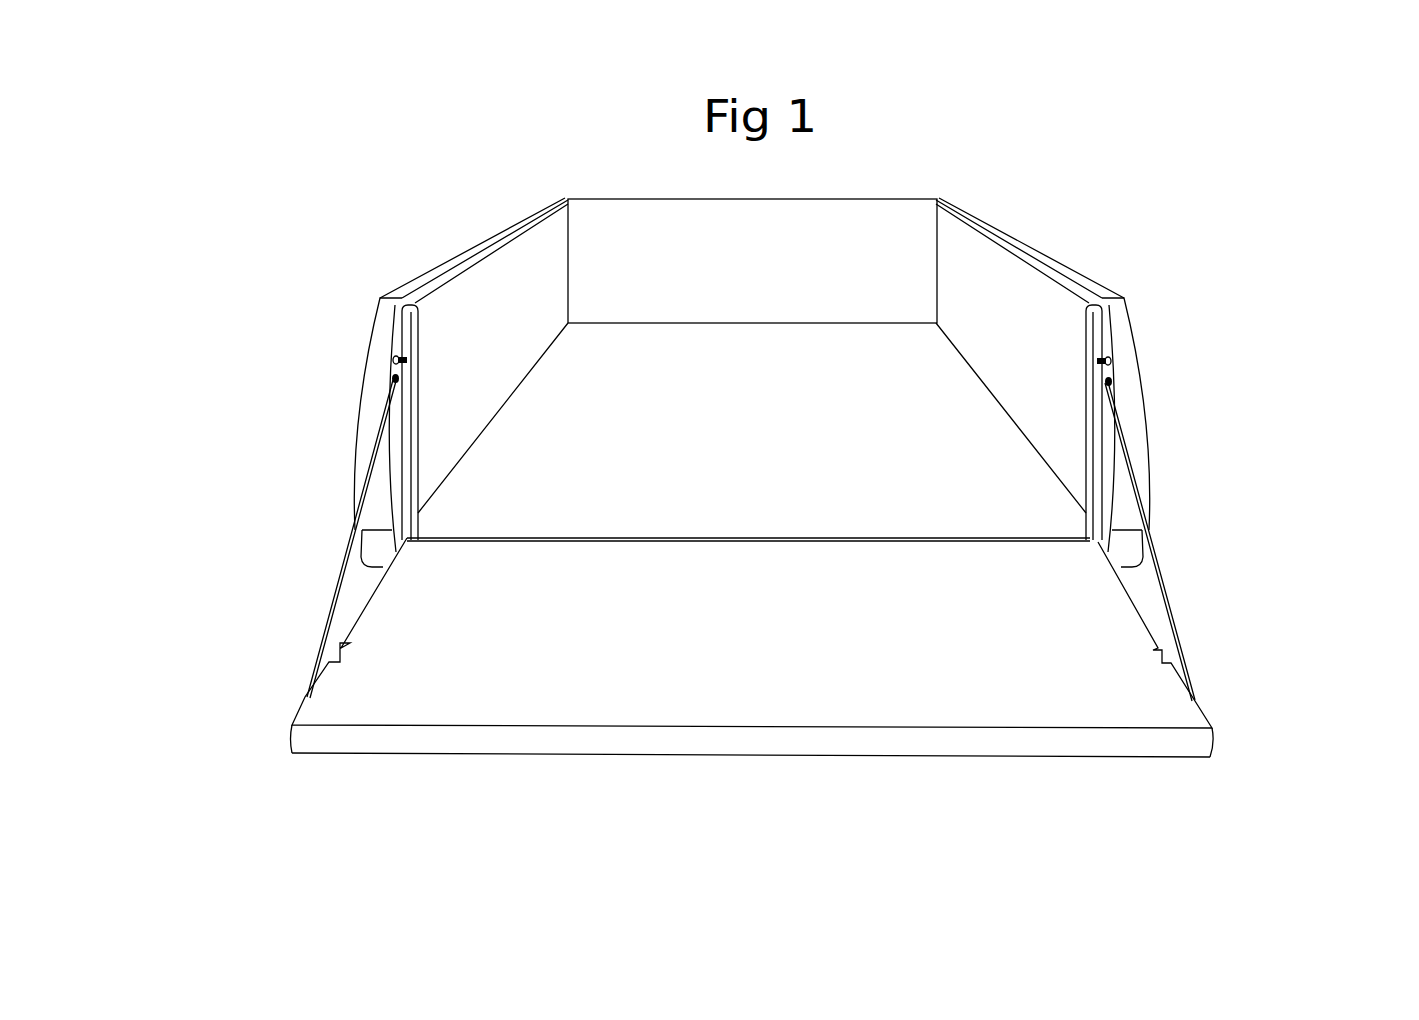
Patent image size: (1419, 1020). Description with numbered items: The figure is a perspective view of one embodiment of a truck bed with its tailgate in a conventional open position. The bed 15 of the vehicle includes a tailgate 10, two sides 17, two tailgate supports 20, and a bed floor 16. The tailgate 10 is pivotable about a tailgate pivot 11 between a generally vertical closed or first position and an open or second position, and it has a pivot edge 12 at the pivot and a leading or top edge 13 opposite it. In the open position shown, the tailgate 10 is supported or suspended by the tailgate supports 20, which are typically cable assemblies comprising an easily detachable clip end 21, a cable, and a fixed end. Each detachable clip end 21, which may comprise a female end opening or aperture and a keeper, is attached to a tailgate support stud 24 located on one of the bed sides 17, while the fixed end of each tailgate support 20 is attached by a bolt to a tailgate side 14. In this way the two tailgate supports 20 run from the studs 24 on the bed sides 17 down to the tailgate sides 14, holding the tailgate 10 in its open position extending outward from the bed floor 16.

The tailgate 10 is at (747, 632).
The tailgate pivot 11 is at (418, 532).
The pivot edge 12 is at (663, 537).
The leading or top edge 13 is at (1100, 750).
The tailgate side 14 is at (288, 733).
The bed 15 is at (868, 223).
The bed floor 16 is at (762, 432).
The sides 17 is at (448, 410).
The tailgate supports 20 is at (337, 550).
The clip end 21 is at (418, 367).
The tailgate support studs 24 is at (398, 380).